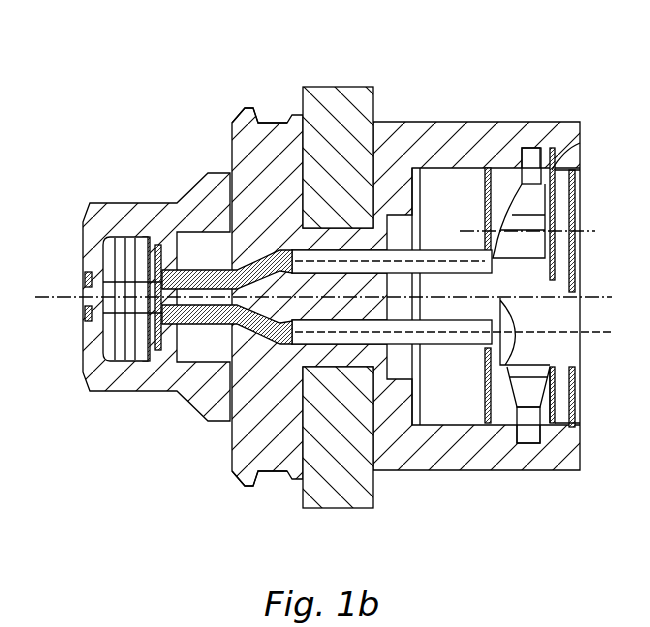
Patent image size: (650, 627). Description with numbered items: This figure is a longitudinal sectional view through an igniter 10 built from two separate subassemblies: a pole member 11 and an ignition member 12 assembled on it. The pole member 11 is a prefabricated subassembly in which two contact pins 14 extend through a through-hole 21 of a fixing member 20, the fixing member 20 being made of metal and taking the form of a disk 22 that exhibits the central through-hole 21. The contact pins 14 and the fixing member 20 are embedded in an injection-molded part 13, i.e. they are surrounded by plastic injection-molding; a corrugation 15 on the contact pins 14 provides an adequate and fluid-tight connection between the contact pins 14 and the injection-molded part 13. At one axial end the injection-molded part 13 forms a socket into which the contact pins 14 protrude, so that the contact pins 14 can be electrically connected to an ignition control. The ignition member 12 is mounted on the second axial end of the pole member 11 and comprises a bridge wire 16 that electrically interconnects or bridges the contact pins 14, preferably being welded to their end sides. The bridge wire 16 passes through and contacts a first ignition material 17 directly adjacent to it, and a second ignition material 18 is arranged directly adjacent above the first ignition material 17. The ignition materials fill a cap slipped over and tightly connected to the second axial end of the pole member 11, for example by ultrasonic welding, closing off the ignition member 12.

The igniter 10 is at (513, 74).
The pole member 11 is at (403, 152).
The ignition member 12 is at (127, 220).
The injection-molded part 13 is at (330, 256).
The contact pins 14 is at (490, 333).
The corrugation 15 is at (200, 320).
The bridge wire 16 is at (176, 232).
The first ignition material 17 is at (143, 363).
The second ignition material 18 is at (111, 351).
The fixing member 20 is at (350, 100).
The through-hole 21 is at (300, 366).
The disk 22 is at (360, 130).